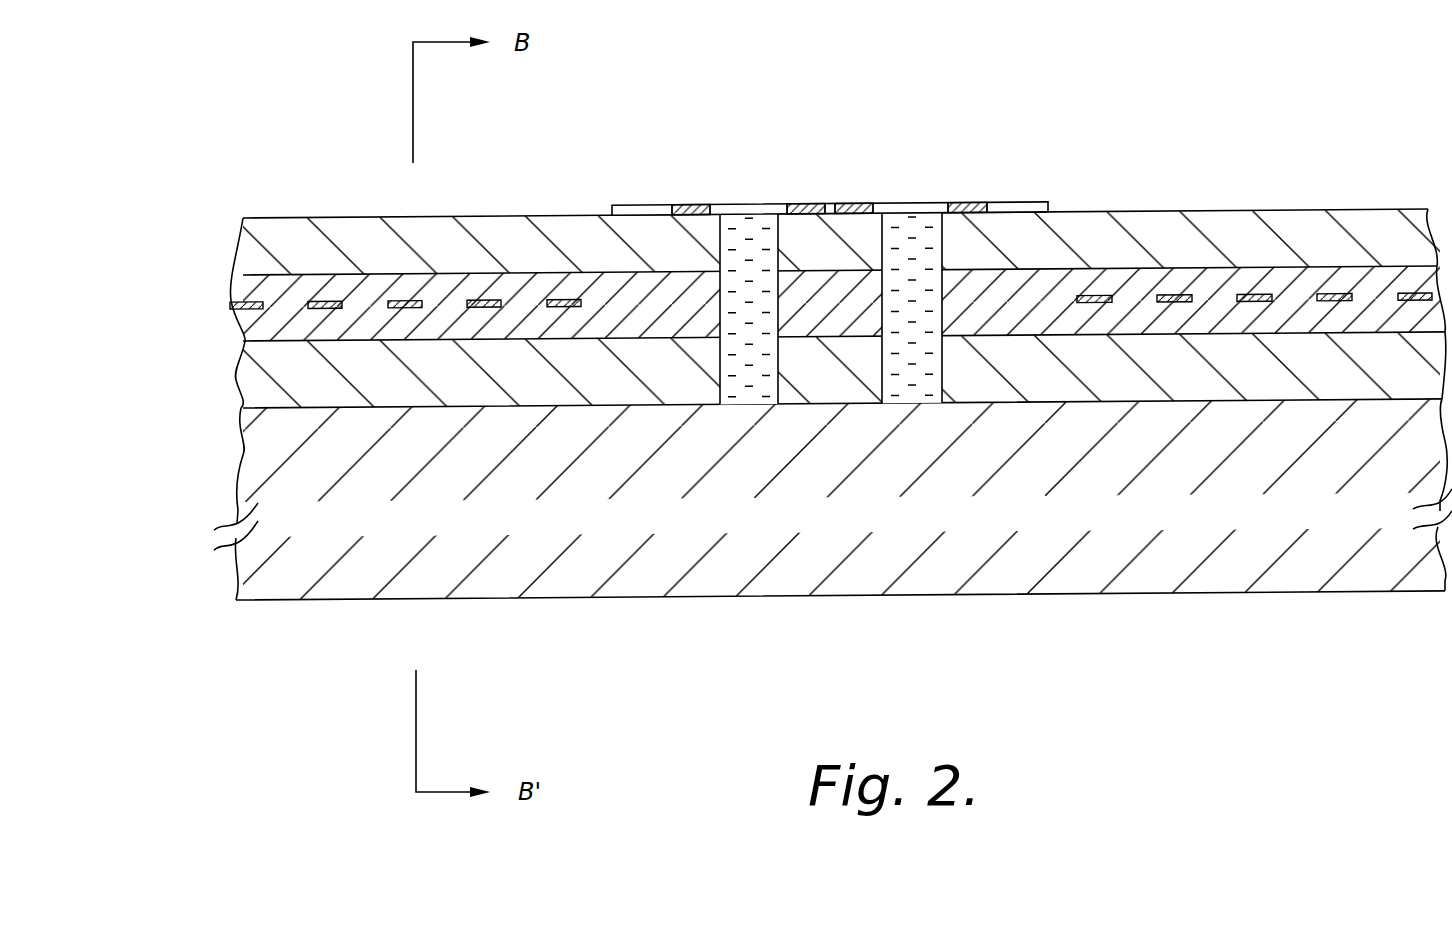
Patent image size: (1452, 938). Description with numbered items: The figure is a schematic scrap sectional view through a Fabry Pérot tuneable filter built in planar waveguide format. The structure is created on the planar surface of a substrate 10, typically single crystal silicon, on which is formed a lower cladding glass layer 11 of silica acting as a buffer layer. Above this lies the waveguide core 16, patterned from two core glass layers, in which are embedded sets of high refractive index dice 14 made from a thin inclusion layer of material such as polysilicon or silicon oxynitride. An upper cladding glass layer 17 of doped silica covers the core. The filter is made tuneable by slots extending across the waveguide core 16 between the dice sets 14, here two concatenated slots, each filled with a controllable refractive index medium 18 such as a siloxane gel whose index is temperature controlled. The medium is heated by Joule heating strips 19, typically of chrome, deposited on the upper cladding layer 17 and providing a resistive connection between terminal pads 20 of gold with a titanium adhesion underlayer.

The substrate 10 is at (280, 450).
The lower cladding glass layer 11 is at (296, 381).
The dice of inclusion layer material 14 is at (565, 302).
The waveguide core 16 is at (273, 318).
The upper cladding glass layer 17 is at (260, 232).
The controllable refractive index medium 18 is at (750, 336).
The Joule heating strips 19 is at (957, 208).
The terminal pads 20 is at (645, 211).